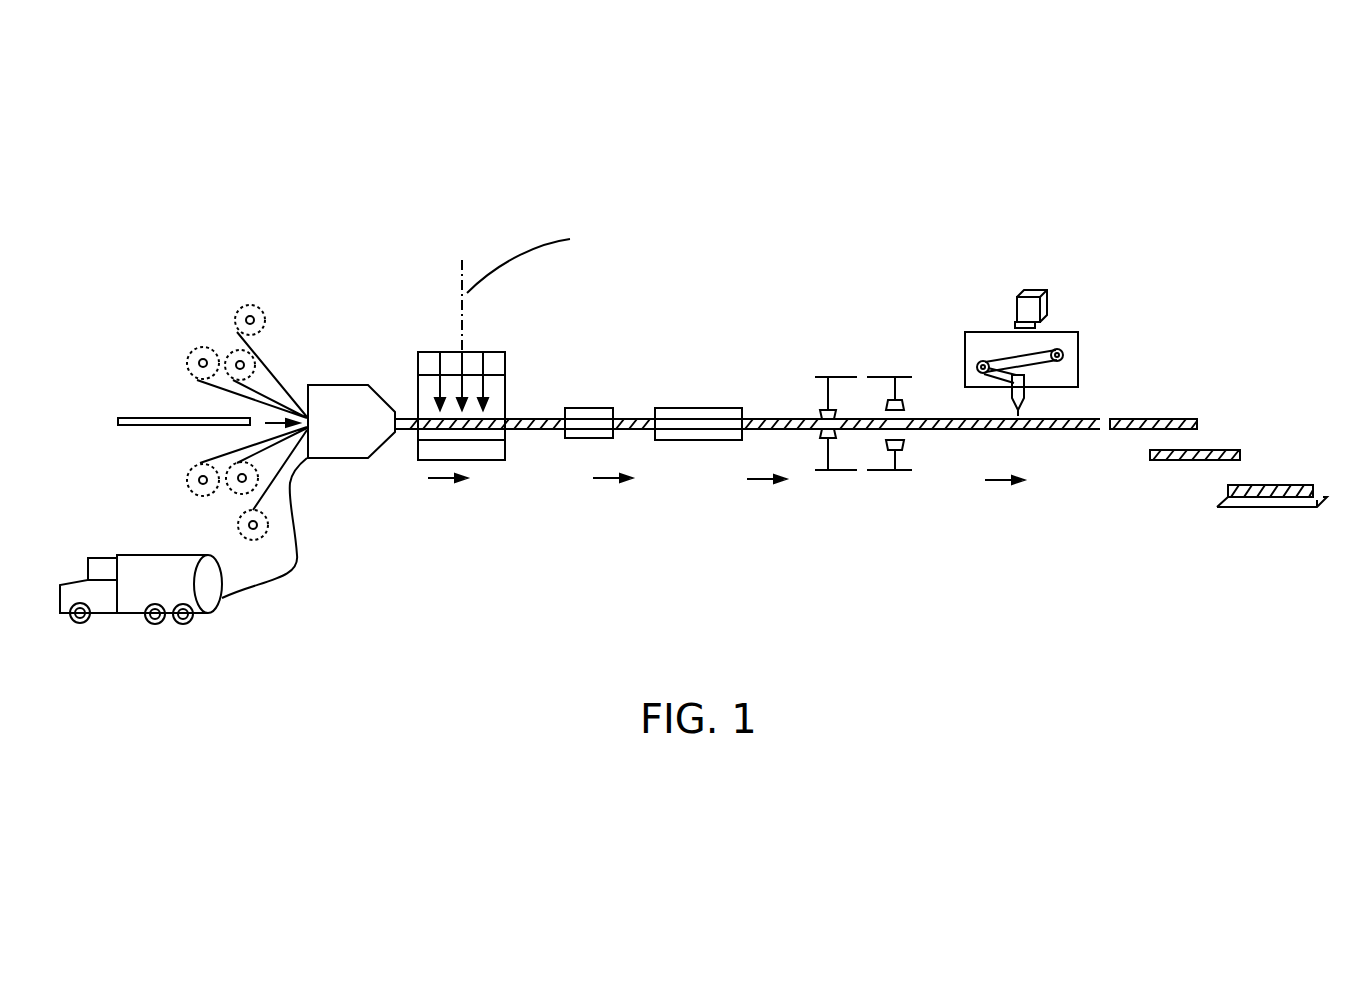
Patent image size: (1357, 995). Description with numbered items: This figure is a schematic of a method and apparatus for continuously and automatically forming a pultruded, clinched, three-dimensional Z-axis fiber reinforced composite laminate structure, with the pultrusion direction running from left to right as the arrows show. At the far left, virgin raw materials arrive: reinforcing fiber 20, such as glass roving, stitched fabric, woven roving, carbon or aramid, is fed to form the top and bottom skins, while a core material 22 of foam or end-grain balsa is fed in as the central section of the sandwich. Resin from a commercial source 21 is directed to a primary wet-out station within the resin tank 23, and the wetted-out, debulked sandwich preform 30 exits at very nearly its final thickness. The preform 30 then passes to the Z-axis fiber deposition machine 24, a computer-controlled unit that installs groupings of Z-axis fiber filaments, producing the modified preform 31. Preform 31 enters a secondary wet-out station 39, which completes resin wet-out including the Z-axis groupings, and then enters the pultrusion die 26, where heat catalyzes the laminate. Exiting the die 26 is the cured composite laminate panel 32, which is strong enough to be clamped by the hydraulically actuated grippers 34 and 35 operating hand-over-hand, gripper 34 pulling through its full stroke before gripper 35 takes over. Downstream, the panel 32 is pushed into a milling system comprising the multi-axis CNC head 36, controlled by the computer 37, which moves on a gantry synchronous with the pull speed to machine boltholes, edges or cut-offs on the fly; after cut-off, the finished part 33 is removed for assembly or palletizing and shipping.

The fiber 20 is at (260, 305).
The commercial resin source 21 is at (153, 553).
The core material 22 is at (145, 417).
The resin tank 23 is at (353, 463).
The Z-axis fiber deposition machine 24 is at (495, 465).
The pultrusion die 26 is at (690, 448).
The sandwich preform 30 is at (408, 417).
The modified preform 31 is at (632, 413).
The cured composite laminate panel 32 is at (765, 432).
The part 33 is at (1153, 415).
The gripper 34 is at (810, 405).
The gripper 35 is at (912, 403).
The multi-axis machine head 36 is at (1025, 402).
The computer 37 is at (1055, 307).
The secondary wet-out station 39 is at (583, 403).